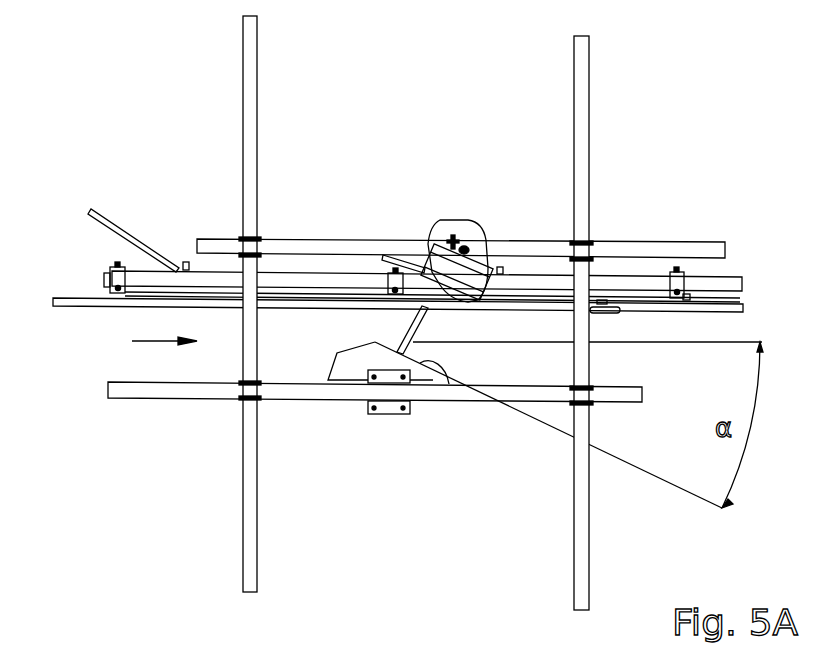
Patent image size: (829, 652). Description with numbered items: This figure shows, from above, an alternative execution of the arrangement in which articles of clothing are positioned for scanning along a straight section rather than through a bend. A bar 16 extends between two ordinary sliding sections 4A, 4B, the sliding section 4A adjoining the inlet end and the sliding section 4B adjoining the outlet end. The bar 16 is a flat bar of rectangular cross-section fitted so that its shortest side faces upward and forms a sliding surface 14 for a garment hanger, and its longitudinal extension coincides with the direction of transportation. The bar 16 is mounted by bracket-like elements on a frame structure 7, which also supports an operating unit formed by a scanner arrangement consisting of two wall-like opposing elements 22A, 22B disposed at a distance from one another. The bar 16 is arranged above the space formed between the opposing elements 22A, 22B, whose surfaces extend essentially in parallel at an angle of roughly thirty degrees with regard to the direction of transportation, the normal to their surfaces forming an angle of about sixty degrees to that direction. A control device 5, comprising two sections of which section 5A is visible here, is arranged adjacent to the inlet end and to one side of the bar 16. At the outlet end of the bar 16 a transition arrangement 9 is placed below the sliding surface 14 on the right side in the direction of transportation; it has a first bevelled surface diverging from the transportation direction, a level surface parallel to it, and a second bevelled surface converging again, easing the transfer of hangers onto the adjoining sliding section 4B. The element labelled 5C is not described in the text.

The section of control device 5A is at (102, 232).
The control device 5 is at (195, 267).
The clamp bracket 5C is at (505, 270).
The frame structure 7 is at (596, 232).
The sliding section 4A is at (72, 309).
The sliding section 4B is at (697, 314).
The transition arrangement 9 is at (606, 314).
The bar 16 is at (275, 310).
The sliding surface 14 is at (300, 312).
The opposing element 22A is at (455, 354).
The opposing element 22B is at (453, 310).